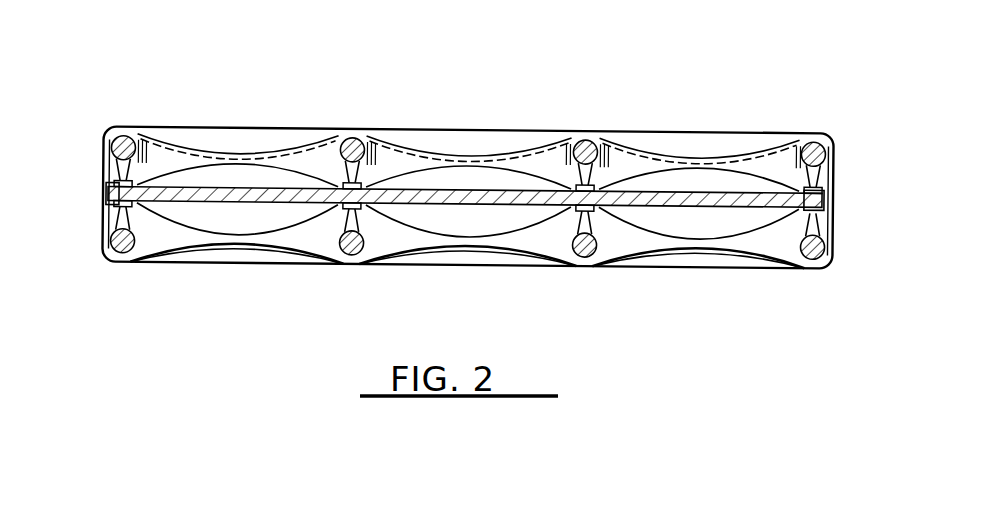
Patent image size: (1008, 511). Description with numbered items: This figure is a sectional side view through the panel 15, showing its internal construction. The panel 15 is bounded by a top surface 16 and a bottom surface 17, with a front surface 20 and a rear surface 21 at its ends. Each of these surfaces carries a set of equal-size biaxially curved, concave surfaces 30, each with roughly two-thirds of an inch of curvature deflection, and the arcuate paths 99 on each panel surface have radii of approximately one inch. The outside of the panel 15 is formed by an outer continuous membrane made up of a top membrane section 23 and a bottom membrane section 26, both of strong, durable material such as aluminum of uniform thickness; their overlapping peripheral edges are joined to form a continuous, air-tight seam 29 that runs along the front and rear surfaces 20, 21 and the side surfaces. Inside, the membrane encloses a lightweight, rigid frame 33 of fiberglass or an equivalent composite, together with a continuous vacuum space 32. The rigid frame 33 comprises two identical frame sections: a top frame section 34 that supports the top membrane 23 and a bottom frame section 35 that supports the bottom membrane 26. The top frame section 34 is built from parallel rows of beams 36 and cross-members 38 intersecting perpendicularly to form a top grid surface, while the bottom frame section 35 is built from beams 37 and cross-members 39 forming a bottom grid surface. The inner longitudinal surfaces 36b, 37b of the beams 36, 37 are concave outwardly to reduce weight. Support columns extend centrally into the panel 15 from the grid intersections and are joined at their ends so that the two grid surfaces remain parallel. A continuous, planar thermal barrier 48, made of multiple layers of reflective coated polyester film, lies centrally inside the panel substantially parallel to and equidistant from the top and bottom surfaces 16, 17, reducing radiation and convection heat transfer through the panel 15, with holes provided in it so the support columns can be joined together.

The panel 15 is at (239, 84).
The top surface 16 is at (493, 91).
The bottom surface 17 is at (455, 278).
The front surface 20 is at (848, 186).
The rear surface 21 is at (86, 143).
The top membrane section 23 is at (228, 128).
The bottom membrane section 26 is at (537, 267).
The air-tight seam 29 is at (832, 197).
The biaxially curved concave surface 30 is at (472, 136).
The continuous vacuum space 32 is at (247, 183).
The rigid frame 33 is at (104, 185).
The top frame section 34 is at (385, 133).
The bottom frame section 35 is at (380, 242).
The beams 36 is at (157, 138).
The inner longitudinal surface of beams 36b is at (290, 165).
The beams 37 is at (323, 238).
The inner longitudinal surface of beams 37b is at (190, 228).
The cross-members 38 is at (120, 132).
The cross-members 39 is at (112, 268).
The thermal barrier 48 is at (740, 263).
The arcuate paths 99 is at (579, 134).